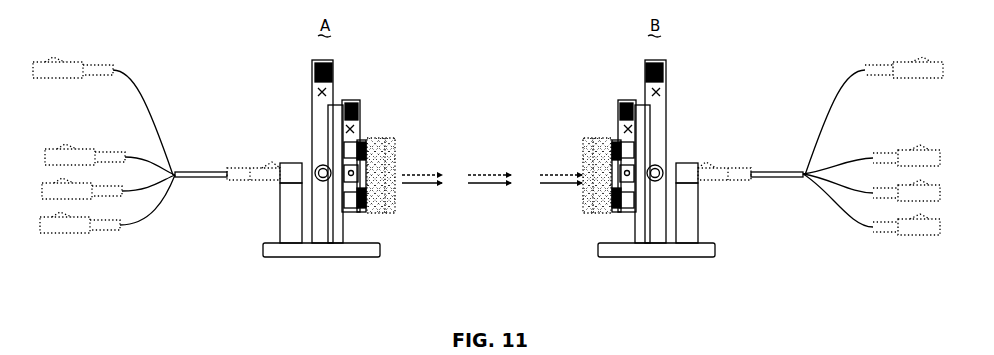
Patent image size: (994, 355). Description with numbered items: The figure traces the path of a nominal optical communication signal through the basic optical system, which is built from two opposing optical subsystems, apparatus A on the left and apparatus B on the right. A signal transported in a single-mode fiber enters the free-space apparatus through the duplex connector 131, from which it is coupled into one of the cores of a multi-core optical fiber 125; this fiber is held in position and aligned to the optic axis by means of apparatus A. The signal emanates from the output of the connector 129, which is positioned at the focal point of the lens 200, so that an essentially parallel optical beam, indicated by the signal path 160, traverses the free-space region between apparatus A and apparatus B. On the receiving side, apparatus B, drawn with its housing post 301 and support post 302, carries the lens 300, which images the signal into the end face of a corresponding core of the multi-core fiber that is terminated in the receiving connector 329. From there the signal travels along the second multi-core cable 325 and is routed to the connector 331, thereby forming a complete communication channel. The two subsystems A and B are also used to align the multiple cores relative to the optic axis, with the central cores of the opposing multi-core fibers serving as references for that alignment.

The duplex connector 131 is at (82, 158).
The multi-core optical fiber 125 is at (208, 172).
The connector 129 is at (257, 168).
The lens 200 is at (385, 197).
The optical signal path 160 is at (485, 173).
The lens 300 is at (593, 197).
The module housing post 301 is at (618, 143).
The module support post 302 is at (658, 120).
The receiving connector 329 is at (718, 172).
The second multi-fiber cable 325 is at (773, 172).
The connector 331 is at (900, 158).